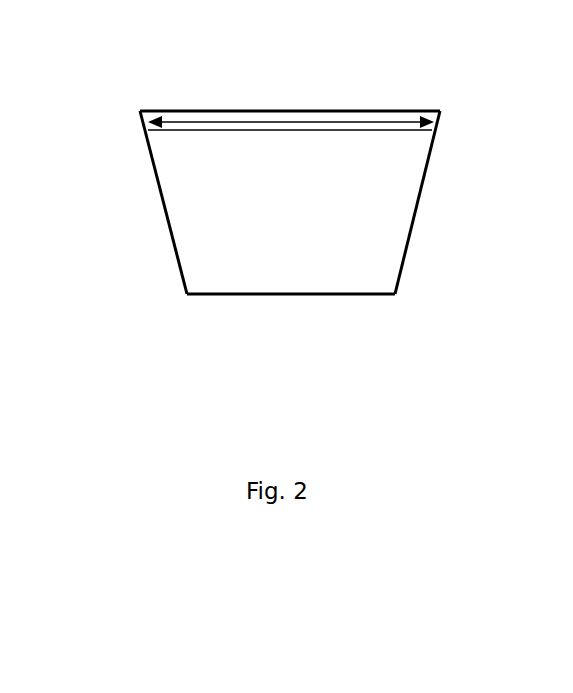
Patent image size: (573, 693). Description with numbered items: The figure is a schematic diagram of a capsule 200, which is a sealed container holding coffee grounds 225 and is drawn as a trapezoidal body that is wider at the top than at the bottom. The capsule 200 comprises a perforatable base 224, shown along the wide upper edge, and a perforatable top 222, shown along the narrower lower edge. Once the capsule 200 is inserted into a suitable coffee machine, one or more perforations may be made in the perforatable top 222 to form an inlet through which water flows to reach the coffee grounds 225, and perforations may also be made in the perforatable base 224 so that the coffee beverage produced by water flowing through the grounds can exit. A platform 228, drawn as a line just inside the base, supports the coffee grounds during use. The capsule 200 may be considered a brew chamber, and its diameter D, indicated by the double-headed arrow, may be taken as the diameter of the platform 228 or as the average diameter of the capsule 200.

The capsule 200 is at (160, 86).
The perforatable base 224 is at (378, 110).
The perforatable top 222 is at (320, 295).
The coffee grounds 225 is at (285, 203).
The platform 228 is at (354, 130).
The diameter D is at (218, 118).